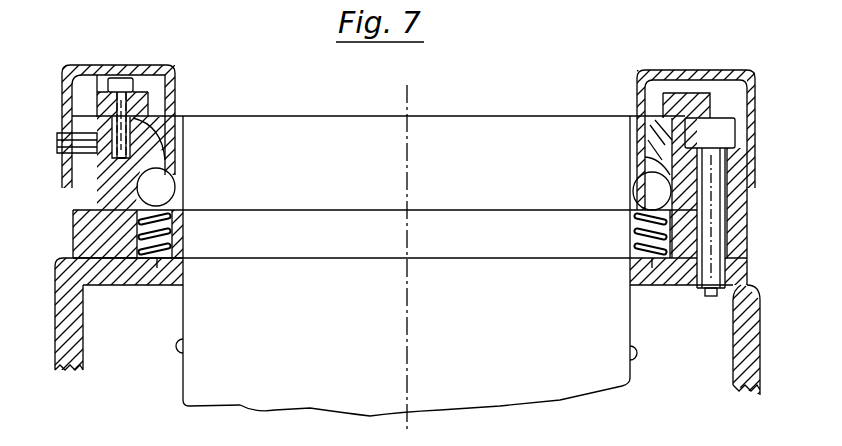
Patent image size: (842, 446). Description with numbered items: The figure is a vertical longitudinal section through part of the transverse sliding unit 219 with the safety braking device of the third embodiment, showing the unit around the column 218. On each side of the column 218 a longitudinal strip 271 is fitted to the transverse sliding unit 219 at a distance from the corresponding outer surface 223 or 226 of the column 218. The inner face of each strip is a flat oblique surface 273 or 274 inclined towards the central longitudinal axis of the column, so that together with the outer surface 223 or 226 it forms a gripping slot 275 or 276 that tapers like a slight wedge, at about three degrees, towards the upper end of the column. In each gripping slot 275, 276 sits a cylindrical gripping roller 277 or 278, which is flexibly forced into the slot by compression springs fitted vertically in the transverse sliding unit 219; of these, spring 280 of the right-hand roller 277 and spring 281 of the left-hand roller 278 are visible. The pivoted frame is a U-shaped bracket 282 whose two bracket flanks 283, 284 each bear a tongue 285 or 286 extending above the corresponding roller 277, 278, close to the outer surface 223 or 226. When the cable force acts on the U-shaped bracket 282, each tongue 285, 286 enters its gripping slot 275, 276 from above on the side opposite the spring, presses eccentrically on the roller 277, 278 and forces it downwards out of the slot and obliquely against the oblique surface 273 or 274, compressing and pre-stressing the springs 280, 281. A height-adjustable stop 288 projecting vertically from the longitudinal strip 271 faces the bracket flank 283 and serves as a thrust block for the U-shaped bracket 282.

The column 218 is at (345, 362).
The transverse sliding unit 219 is at (740, 328).
The outer surface 223 is at (630, 355).
The outer surface 226 is at (183, 352).
The longitudinal strip 271 is at (737, 207).
The oblique surface 273 is at (628, 142).
The oblique surface 274 is at (172, 68).
The gripping slot 275 is at (657, 162).
The gripping slot 276 is at (156, 152).
The cylindrical gripping roller 277 is at (648, 190).
The cylindrical gripping roller 278 is at (183, 190).
The compression spring 280 is at (637, 228).
The compression spring 281 is at (183, 243).
The U-shaped bracket 282 is at (672, 68).
The bracket flank 283 is at (663, 75).
The bracket flank 284 is at (125, 70).
The tongue 285 is at (627, 117).
The tongue 286 is at (183, 157).
The stop 288 is at (702, 116).